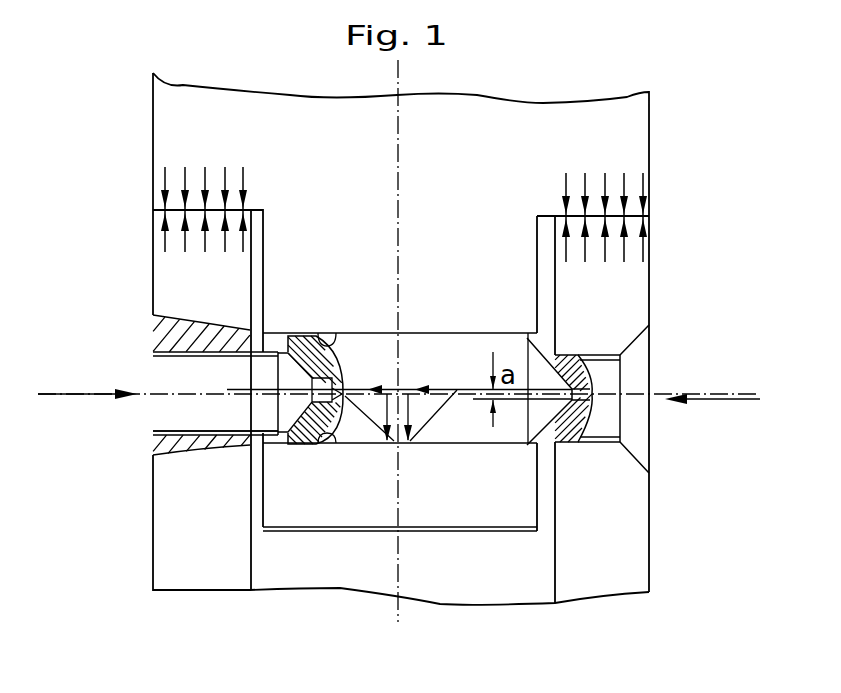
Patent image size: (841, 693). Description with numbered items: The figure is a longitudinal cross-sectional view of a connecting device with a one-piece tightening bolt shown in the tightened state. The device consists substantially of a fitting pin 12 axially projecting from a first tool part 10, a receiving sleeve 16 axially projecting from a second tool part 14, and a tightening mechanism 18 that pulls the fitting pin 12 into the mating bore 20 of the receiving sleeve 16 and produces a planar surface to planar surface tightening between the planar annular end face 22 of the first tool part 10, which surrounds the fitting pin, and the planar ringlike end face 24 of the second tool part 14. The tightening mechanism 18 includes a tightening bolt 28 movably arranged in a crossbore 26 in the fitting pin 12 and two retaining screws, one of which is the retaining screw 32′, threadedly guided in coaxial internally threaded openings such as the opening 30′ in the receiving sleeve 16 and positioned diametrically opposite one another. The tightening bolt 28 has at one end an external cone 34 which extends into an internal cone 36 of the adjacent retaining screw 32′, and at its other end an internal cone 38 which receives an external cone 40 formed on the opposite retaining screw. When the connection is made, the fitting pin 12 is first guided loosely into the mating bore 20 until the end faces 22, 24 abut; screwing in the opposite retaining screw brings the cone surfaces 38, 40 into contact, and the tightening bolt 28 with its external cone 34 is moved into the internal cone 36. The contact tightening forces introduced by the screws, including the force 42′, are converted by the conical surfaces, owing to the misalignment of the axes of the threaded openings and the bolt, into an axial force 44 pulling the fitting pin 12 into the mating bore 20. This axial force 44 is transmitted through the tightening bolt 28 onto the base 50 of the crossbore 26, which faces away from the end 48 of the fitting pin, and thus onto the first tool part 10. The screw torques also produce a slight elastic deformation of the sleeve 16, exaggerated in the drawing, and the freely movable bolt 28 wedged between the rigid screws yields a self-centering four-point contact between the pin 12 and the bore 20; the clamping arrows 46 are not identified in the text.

The first tool part 10 is at (610, 140).
The fitting pin 12 is at (283, 279).
The second tool part 14 is at (488, 581).
The receiving sleeve 16 is at (620, 527).
The tightening mechanism 18 is at (173, 411).
The mating bore 20 is at (253, 552).
The annular end face 22 is at (258, 214).
The ringlike end face 24 is at (178, 207).
The crossbore 26 is at (336, 335).
The tightening bolt 28 is at (468, 362).
The internally threaded opening 30′ is at (585, 350).
The retaining screw 32′ is at (632, 378).
The external cone 34 is at (542, 372).
The internal cone 36 is at (598, 433).
The internal cone 38 is at (289, 357).
The external cone 40 is at (287, 444).
The contact tightening force 42′ is at (737, 403).
The axial force 44 is at (412, 444).
The clamping force arrows 46 is at (643, 243).
The end of the fitting pin 48 is at (435, 533).
The base of the crossbore 50 is at (332, 444).